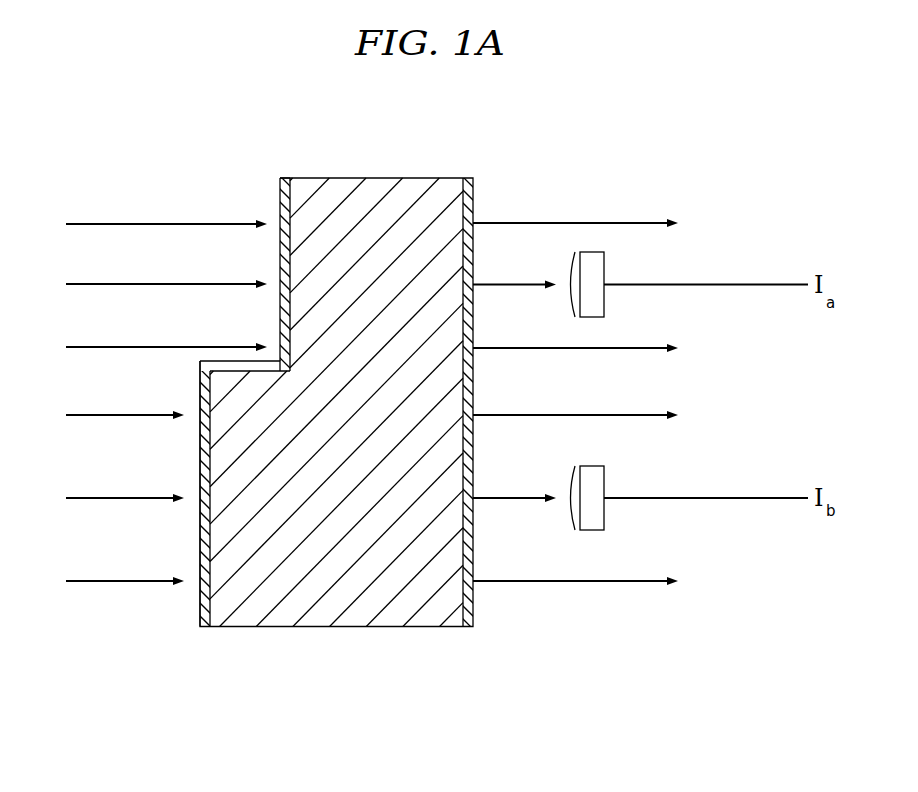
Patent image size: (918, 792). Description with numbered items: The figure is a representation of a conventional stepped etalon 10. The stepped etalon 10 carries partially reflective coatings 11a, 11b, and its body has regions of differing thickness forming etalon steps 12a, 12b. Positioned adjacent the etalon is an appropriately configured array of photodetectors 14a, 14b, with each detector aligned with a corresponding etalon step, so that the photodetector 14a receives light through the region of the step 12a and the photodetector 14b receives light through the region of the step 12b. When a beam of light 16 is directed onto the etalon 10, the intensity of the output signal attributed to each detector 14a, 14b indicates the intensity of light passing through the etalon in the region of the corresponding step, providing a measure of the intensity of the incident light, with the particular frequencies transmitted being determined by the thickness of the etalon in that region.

The stepped etalon 10 is at (333, 643).
The partially reflective coating 11a is at (285, 176).
The partially reflective coating 11b is at (468, 176).
The etalon step 12a is at (280, 194).
The etalon step 12b is at (200, 603).
The photodetector 14a is at (604, 267).
The photodetector 14b is at (604, 514).
The beam of light 16 is at (213, 361).